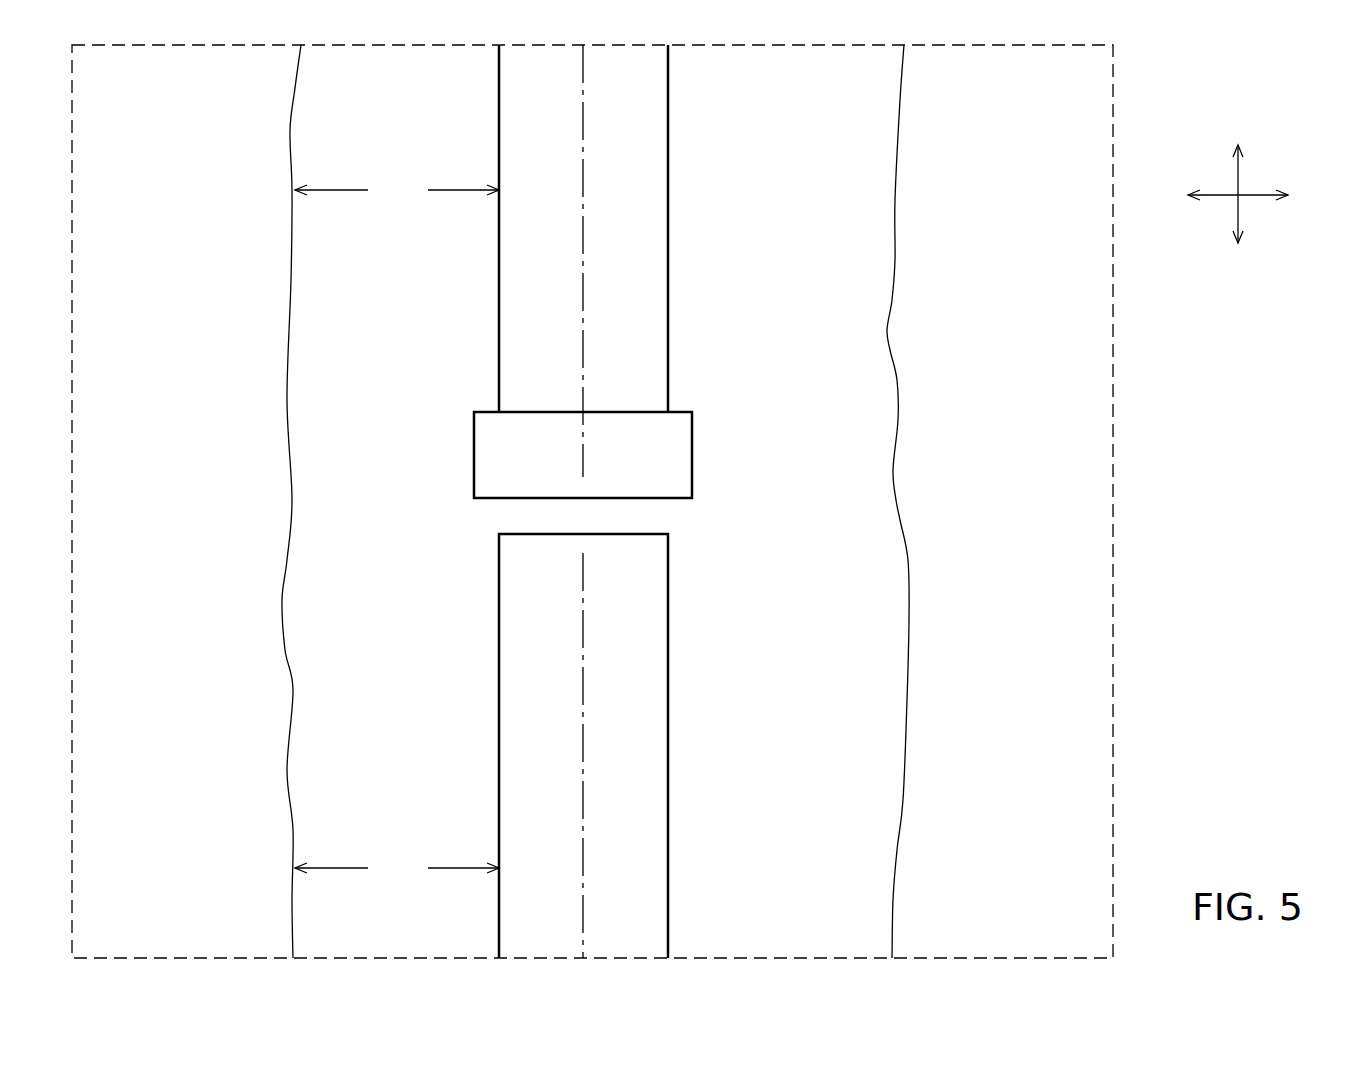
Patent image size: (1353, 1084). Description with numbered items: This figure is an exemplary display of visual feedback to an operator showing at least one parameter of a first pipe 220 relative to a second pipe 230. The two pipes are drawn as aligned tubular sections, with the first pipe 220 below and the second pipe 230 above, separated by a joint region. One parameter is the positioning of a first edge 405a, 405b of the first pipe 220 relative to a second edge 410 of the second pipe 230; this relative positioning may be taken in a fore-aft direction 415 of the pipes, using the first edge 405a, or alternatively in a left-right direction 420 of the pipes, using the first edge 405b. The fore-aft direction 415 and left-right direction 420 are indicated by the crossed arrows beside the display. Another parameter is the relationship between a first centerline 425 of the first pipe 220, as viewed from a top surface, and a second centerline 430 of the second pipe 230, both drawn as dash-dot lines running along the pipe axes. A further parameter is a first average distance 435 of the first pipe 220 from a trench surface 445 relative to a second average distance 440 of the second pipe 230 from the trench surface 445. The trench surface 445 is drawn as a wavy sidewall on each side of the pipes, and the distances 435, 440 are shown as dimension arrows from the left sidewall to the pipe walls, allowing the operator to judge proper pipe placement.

The first pipe 220 is at (622, 760).
The second pipe 230 is at (618, 307).
The first edge 405a is at (480, 753).
The first edge 405b is at (500, 533).
The second edge 410 is at (463, 355).
The fore-aft direction 415 is at (1236, 213).
The left-right direction 420 is at (1255, 197).
The first centerline 425 is at (585, 829).
The second centerline 430 is at (585, 143).
The first average distance 435 is at (397, 869).
The second average distance 440 is at (397, 189).
The trench surface 445 is at (268, 648).